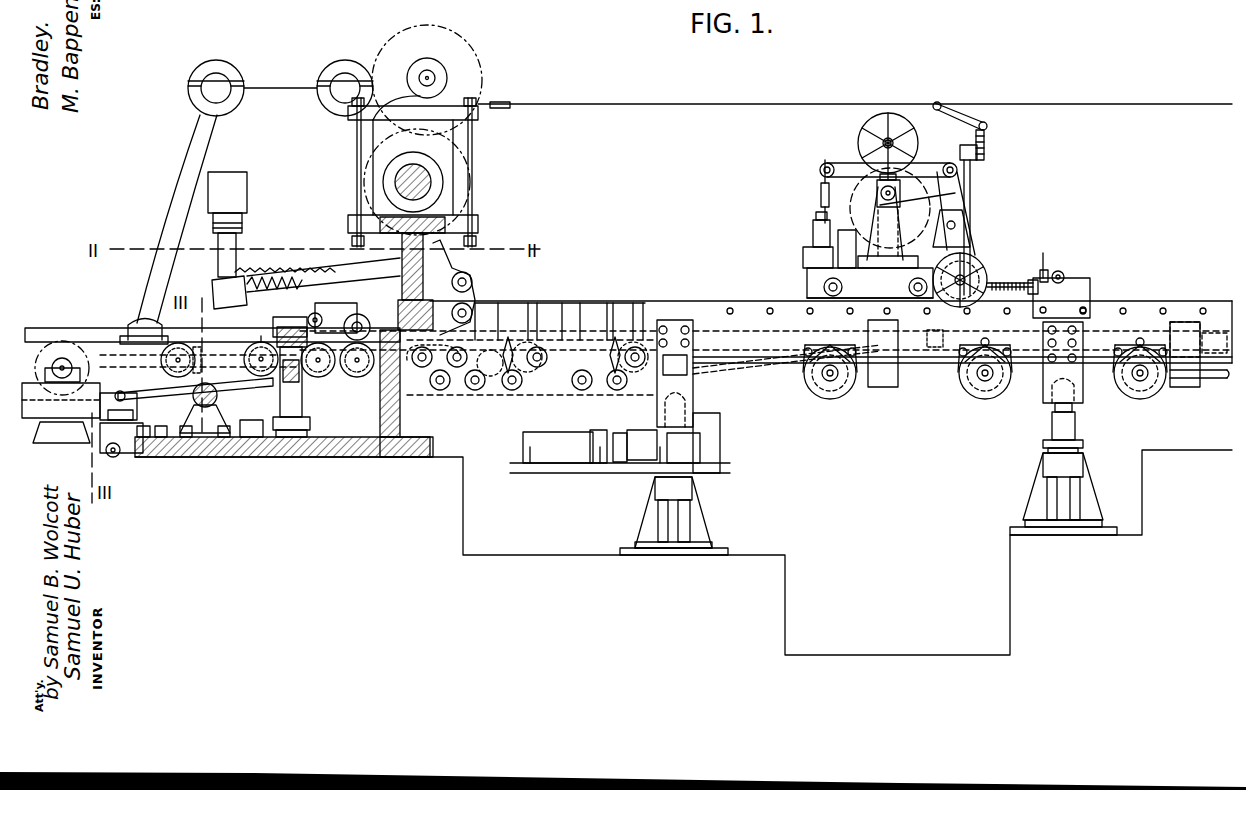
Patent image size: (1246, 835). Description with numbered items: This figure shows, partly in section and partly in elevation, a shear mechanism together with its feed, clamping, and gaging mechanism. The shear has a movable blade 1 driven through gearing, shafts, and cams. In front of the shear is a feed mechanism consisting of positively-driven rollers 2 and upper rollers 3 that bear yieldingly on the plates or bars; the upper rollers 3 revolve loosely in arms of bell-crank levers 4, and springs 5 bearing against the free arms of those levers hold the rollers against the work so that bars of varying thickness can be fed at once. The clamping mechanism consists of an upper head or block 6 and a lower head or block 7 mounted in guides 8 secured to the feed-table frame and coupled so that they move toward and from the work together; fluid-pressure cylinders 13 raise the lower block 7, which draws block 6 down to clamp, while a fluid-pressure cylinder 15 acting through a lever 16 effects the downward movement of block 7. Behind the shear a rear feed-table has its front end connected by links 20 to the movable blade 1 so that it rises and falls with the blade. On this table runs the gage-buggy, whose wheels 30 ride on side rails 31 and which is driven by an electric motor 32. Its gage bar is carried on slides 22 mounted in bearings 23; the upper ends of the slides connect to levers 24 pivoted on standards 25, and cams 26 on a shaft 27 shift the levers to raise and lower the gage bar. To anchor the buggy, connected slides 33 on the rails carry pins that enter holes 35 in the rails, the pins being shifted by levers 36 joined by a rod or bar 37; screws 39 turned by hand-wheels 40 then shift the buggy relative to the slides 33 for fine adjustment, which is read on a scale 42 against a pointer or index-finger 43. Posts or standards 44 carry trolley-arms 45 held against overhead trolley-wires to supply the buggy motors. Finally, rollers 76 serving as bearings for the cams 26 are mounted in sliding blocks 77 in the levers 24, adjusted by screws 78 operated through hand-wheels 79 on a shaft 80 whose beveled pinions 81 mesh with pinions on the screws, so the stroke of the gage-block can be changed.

The movable blade 1 is at (407, 345).
The positively-driven rollers 2 is at (250, 368).
The upper rollers 3 is at (367, 323).
The bell-crank levers 4 is at (318, 317).
The springs 5 is at (293, 275).
The upper head or block 6 is at (272, 323).
The lower head or block 7 is at (270, 377).
The guides 8 is at (310, 377).
The fluid-pressure cylinders 13 is at (297, 425).
The fluid-pressure cylinder 15 is at (110, 433).
The lever 16 is at (194, 405).
The links 20 is at (470, 298).
The slides 22 is at (813, 240).
The bearings 23 is at (810, 275).
The levers 24 is at (840, 163).
The standards 25 is at (953, 205).
The cams 26 is at (910, 193).
The shaft 27 is at (877, 195).
The wheels 30 is at (808, 300).
The side rails 31 is at (985, 355).
The electric motor 32 is at (965, 235).
The slides 33 is at (1070, 290).
The holes 35 is at (696, 384).
The levers 36 is at (1064, 273).
The rod or bar 37 is at (1050, 270).
The screws 39 is at (1017, 285).
The hand-wheels 40 is at (980, 273).
The scale 42 is at (1087, 356).
The pointer or index-finger 43 is at (1035, 277).
The posts or standards 44 is at (972, 173).
The trolley-arms 45 is at (965, 122).
The rollers 76 is at (662, 106).
The sliding blocks 77 is at (955, 193).
The screws 78 is at (858, 132).
The hand-wheels 79 is at (865, 133).
The shaft 80 is at (890, 138).
The beveled pinions 81 is at (907, 190).